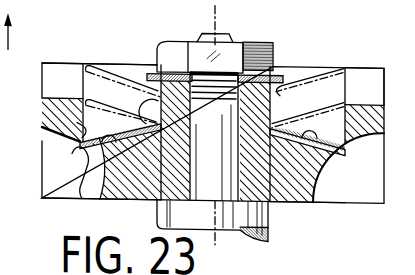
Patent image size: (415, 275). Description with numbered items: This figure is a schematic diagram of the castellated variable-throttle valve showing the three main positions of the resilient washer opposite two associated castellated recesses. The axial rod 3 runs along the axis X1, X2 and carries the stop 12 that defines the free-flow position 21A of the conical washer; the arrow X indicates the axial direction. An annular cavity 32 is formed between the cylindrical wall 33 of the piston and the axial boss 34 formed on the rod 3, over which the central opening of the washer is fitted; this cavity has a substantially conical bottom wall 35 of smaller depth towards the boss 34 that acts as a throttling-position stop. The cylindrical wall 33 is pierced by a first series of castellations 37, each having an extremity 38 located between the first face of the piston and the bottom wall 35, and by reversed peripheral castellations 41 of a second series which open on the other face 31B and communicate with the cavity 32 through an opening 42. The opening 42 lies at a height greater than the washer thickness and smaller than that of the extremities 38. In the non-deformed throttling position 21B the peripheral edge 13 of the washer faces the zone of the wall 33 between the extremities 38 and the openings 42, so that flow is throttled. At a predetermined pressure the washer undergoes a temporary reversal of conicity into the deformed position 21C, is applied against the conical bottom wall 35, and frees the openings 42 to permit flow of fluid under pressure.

The axial rod 3 is at (203, 220).
The stop 12 is at (298, 84).
The peripheral edge 13 is at (348, 97).
The free-flow position of the washer 21A is at (132, 62).
The throttling position of the washer 21B is at (290, 134).
The deformed position of the washer 21C is at (122, 199).
The other face of the piston 31B is at (286, 205).
The annular cavity 32 is at (97, 86).
The cylindrical wall 33 is at (84, 148).
The axial boss 34 is at (137, 138).
The conical bottom wall 35 is at (322, 157).
The castellations of the first series 37 is at (62, 73).
The extremity of the castellation 38 is at (48, 94).
The peripheral castellations of the second series 41 is at (47, 146).
The opening 42 is at (76, 198).
The direction arrow X is at (18, 53).
The axis end X1 is at (228, 25).
The axis end X2 is at (226, 232).